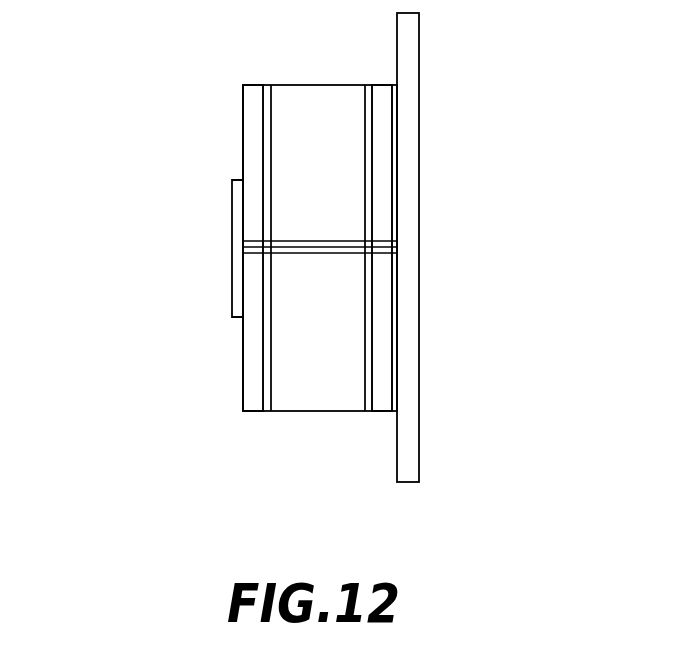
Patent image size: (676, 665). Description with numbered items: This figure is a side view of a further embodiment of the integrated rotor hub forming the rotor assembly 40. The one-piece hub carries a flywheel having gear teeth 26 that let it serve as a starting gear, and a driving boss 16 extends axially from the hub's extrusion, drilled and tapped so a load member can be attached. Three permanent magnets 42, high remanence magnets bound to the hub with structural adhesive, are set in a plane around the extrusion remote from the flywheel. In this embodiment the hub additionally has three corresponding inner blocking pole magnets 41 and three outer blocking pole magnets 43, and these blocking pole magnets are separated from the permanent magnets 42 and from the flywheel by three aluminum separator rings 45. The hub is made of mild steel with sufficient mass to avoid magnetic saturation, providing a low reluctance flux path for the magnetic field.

The driving boss 16 is at (232, 293).
The gear teeth 26 is at (409, 188).
The rotor assembly 40 is at (462, 262).
The inner blocking pole magnets 41 is at (380, 355).
The permanent magnets 42 is at (313, 88).
The outer blocking pole magnets 43 is at (243, 378).
The aluminum separator rings 45 is at (395, 411).